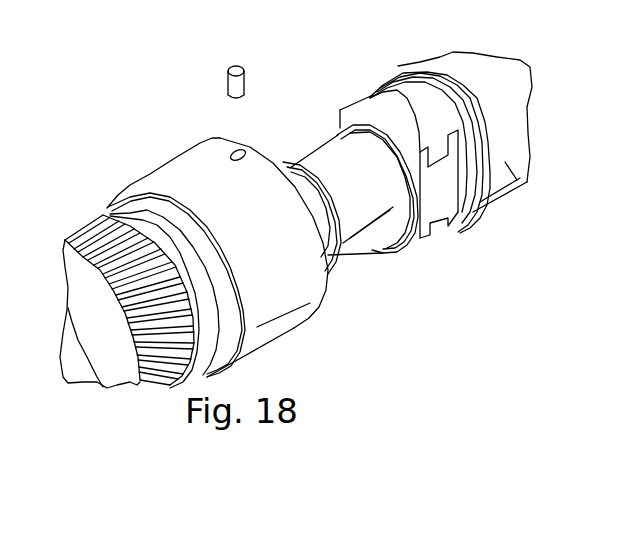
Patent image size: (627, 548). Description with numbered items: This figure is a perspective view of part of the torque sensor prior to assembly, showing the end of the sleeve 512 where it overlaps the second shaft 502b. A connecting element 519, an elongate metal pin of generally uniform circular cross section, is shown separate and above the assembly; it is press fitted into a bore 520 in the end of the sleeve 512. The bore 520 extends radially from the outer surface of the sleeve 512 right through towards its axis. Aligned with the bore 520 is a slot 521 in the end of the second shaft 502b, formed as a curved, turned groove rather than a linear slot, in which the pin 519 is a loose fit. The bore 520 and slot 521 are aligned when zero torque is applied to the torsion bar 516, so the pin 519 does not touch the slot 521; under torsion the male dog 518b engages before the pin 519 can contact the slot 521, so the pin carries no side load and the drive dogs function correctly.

The sleeve 512 is at (190, 174).
The torsion bar 516 is at (336, 257).
The male dog 518b is at (467, 222).
The connecting element 519 is at (243, 80).
The bore 520 is at (247, 152).
The slot 521 is at (403, 107).
The second shaft 502b is at (528, 183).